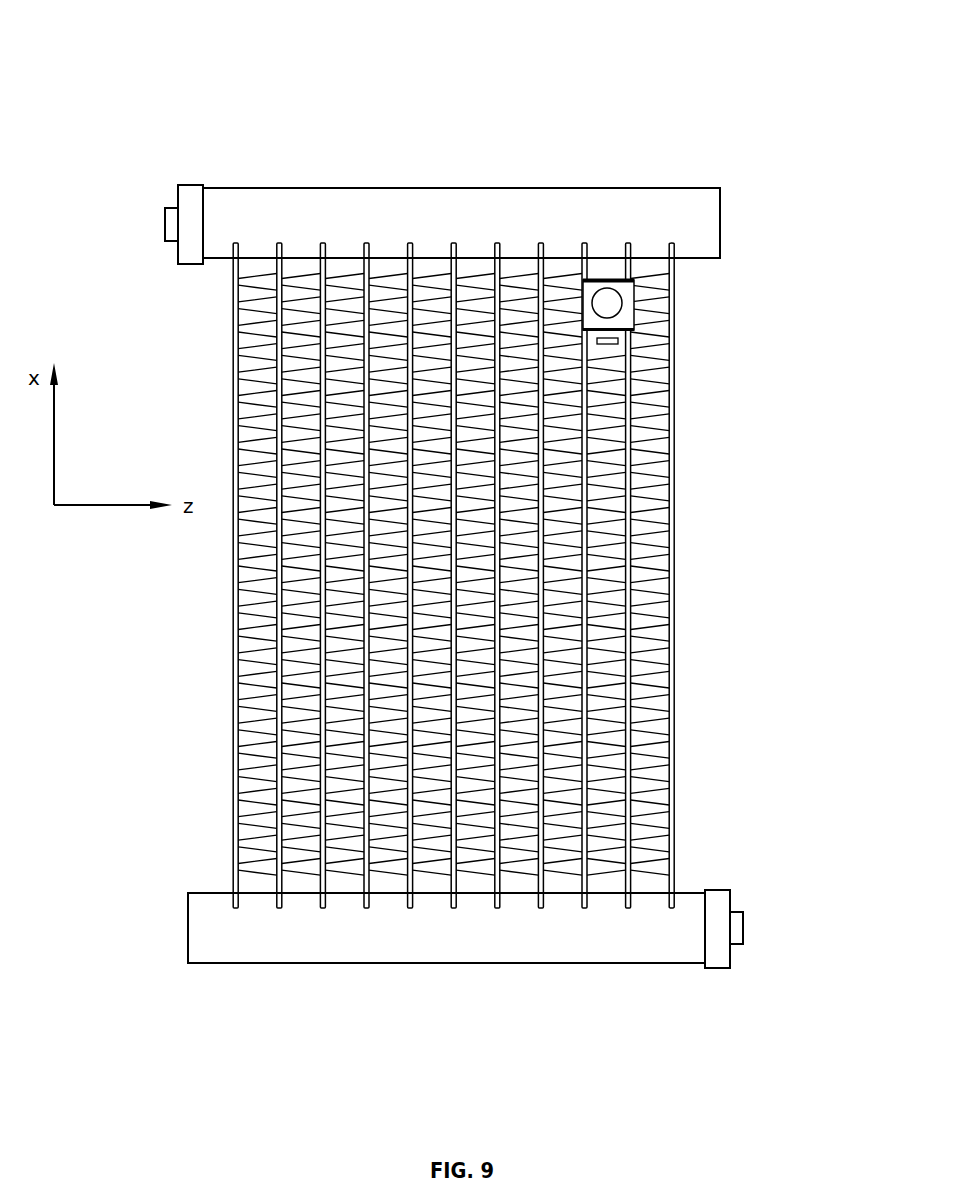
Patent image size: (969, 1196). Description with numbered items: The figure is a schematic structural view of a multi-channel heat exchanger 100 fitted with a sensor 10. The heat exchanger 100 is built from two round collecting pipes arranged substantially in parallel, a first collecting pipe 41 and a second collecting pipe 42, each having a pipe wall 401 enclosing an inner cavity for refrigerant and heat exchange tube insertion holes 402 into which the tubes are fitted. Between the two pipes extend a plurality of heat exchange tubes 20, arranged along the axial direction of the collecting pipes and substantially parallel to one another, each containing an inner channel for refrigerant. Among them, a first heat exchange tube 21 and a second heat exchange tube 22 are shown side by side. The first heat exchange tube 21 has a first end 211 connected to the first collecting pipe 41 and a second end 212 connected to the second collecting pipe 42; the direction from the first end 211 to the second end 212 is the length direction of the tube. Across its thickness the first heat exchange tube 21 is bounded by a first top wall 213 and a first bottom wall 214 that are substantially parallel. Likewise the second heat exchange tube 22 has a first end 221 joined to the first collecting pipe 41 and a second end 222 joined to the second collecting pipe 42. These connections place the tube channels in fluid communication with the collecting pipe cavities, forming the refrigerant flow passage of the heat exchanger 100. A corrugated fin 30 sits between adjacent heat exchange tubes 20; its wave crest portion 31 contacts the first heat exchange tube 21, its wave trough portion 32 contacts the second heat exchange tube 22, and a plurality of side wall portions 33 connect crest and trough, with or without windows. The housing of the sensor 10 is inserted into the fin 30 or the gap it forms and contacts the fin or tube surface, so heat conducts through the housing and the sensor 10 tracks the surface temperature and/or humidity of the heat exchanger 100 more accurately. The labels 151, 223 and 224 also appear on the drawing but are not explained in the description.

The heat exchanger 100 is at (458, 122).
The sensor 10 is at (704, 284).
The sensor mounting bracket 151 is at (634, 310).
The heat exchange tube 20 is at (532, 532).
The first heat exchange tube 21 is at (741, 575).
The first top wall 213 is at (645, 420).
The first bottom wall 214 is at (640, 448).
The second heat exchange tube 22 is at (714, 580).
The first fin portion 223 is at (714, 580).
The second fin portion 224 is at (640, 570).
The first end of the second heat exchange tube 221 is at (646, 556).
The second end of the second heat exchange tube 222 is at (584, 910).
The first end of the first heat exchange tube 211 is at (699, 558).
The second end of the first heat exchange tube 212 is at (628, 910).
The fin 30 is at (706, 615).
The wave crest portion 31 is at (706, 615).
The wave trough portion 32 is at (698, 615).
The side wall portion 33 is at (640, 745).
The first collecting pipe 41 is at (665, 220).
The second collecting pipe 42 is at (675, 945).
The pipe wall 401 is at (222, 235).
The heat exchange tube insertion hole 402 is at (238, 243).